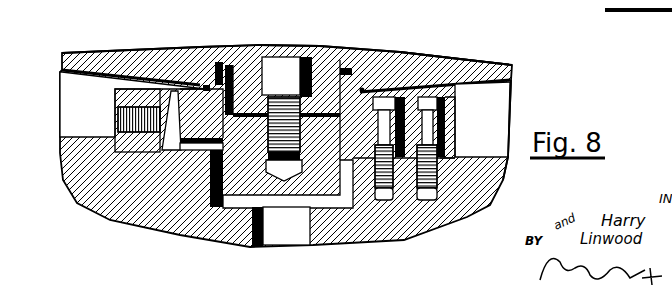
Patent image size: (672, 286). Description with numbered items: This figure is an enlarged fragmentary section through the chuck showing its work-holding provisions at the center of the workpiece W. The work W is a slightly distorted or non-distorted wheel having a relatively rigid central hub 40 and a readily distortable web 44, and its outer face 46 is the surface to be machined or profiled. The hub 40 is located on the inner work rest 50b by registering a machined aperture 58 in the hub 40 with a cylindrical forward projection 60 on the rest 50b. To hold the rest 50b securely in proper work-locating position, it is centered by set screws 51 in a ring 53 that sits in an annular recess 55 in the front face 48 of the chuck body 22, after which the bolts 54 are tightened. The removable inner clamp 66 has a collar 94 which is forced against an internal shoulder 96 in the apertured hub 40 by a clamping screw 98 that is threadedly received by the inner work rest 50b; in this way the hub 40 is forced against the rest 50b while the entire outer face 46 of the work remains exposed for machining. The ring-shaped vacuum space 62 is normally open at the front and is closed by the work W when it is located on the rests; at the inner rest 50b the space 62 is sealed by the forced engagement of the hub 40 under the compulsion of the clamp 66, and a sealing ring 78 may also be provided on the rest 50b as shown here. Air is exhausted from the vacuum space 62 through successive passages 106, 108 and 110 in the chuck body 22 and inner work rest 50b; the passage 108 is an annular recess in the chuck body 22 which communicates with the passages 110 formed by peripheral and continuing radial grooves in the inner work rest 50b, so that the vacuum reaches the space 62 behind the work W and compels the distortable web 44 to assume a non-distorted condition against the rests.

The chuck body 22 is at (80, 182).
The web 44 is at (67, 56).
The outer face 46 is at (97, 52).
The central hub 40 is at (212, 67).
The internal shoulder 96 is at (213, 67).
The collar 94 is at (218, 58).
The inner clamp 66 is at (242, 55).
The clamping screw 98 is at (282, 58).
The cylindrical forward projection 60 is at (350, 73).
The machined aperture 58 is at (361, 88).
The sealing ring 78 is at (378, 93).
The inner work rest 50b is at (392, 100).
The bolts 54 is at (400, 93).
The workpiece W is at (478, 60).
The vacuum space 62 is at (500, 100).
The front face 48 is at (507, 147).
The ring 53 is at (457, 118).
The annular recess 55 is at (443, 160).
The set screws 51 is at (139, 112).
The passages 110 is at (173, 140).
The passage 106 is at (290, 240).
The passage 108 is at (328, 205).